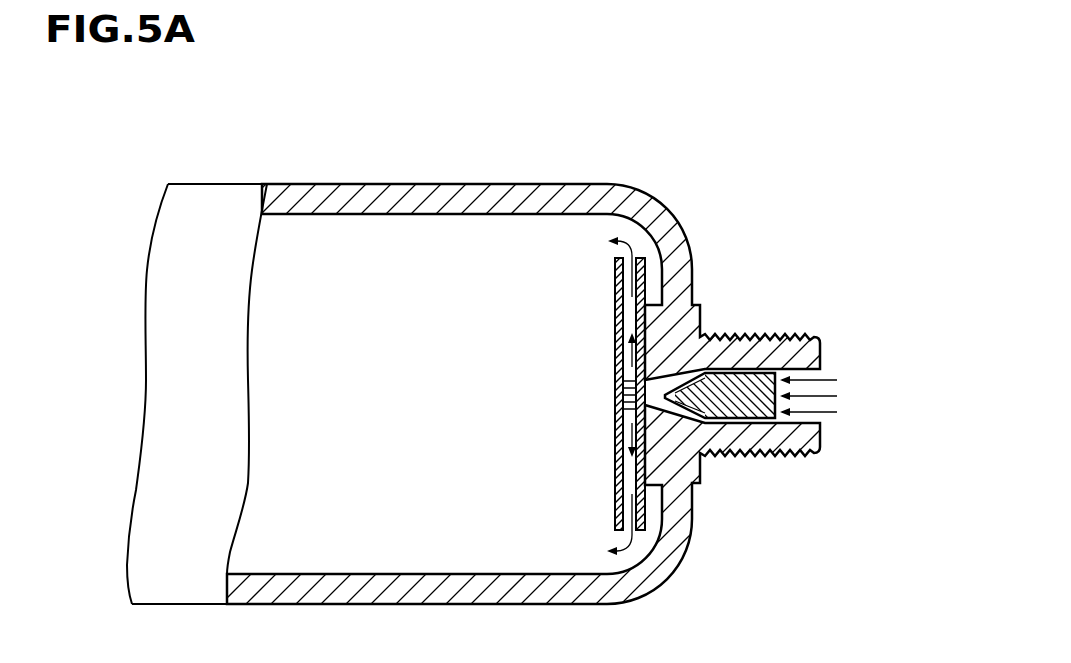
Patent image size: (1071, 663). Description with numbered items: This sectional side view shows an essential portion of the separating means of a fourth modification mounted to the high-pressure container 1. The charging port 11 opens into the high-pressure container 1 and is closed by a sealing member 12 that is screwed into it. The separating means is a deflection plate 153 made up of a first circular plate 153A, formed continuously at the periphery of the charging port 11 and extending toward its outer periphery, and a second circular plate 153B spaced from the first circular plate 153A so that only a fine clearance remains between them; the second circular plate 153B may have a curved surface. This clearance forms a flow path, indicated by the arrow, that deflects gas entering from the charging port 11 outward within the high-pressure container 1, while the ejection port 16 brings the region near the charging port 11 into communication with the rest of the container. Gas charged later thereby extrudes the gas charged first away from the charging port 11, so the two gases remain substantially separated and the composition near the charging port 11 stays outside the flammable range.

The high-pressure container 1 is at (273, 186).
The charging port 11 is at (702, 333).
The sealing member 12 is at (746, 385).
The ejection port 16 is at (630, 533).
The deflection plate 153 is at (490, 100).
The first circular plate 153A is at (666, 300).
The second circular plate 153B is at (614, 298).